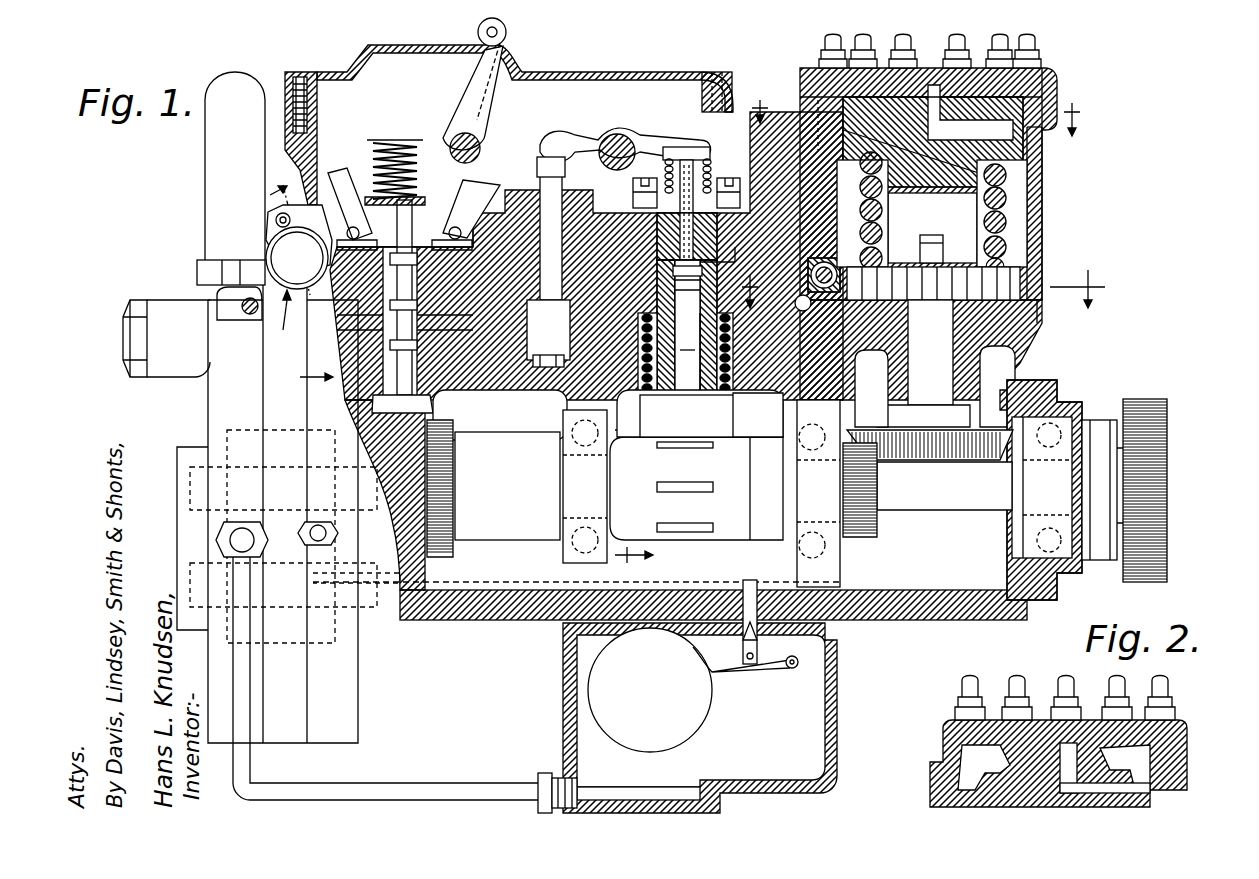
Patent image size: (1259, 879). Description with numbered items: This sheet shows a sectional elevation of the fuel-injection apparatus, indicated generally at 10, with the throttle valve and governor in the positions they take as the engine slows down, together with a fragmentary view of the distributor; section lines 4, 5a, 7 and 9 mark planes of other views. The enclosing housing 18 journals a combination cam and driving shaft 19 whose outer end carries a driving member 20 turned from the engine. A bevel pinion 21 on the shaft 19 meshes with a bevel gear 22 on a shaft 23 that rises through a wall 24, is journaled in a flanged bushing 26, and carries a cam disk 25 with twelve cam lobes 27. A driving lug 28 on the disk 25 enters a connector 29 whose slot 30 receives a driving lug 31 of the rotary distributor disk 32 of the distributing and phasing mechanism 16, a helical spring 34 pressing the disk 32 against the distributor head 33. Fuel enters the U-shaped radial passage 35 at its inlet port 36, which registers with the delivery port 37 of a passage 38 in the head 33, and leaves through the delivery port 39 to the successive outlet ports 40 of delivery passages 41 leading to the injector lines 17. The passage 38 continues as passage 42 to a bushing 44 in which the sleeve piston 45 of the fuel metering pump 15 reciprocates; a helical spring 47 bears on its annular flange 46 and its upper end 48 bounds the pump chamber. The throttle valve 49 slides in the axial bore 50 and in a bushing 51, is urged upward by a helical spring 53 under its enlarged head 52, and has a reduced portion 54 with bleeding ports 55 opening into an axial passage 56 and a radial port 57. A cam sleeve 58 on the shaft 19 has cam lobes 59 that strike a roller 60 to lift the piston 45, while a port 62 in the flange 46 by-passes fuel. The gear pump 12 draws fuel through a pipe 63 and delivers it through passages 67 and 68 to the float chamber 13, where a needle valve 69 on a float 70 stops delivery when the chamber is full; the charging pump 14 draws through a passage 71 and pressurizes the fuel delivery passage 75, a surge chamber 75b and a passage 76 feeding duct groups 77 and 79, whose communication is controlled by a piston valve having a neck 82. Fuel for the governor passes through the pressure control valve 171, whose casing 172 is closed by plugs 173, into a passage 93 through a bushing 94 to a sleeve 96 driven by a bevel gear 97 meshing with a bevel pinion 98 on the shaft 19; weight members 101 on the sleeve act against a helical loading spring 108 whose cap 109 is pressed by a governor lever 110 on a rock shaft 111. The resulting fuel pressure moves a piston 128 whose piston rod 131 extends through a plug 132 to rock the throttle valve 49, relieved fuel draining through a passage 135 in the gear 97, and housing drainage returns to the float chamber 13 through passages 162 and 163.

In FIG. 1, the section line 4 is at (913, 109).
In FIG. 1, the section line 5a is at (301, 281).
In FIG. 1, the section line 7 is at (928, 289).
In FIG. 1, the section line 9 is at (608, 494).
In FIG. 1, the pump housing 10 is at (1097, 158).
In FIG. 1, the gear pump 12 is at (330, 645).
In FIG. 1, the float chamber 13 is at (562, 712).
In FIG. 1, the charging pump 14 is at (222, 437).
In FIG. 1, the fuel metering pump 15 is at (722, 170).
In FIG. 1, the distributing and phasing mechanism 16 is at (1042, 147).
In FIG. 1, the injector line 17 is at (1030, 43).
In FIG. 1, the housing 18 is at (1042, 218).
In FIG. 1, the cam and driving shaft 19 is at (970, 505).
In FIG. 1, the driving member 20 is at (1150, 400).
In FIG. 1, the bevel pinion 21 is at (860, 530).
In FIG. 1, the bevel gear 22 is at (918, 462).
In FIG. 1, the shaft 23 is at (935, 363).
In FIG. 1, the wall 24 is at (990, 355).
In FIG. 1, the cam disk 25 is at (1010, 280).
In FIG. 1, the flanged bushing 26 is at (1030, 314).
In FIG. 1, the cam lobes 27 is at (1020, 268).
In FIG. 1, the driving lug 28 is at (935, 250).
In FIG. 1, the connector 29 is at (1007, 216).
In FIG. 1, the slot 30 is at (932, 213).
In FIG. 1, the driving lug 31 is at (1008, 196).
In FIG. 1, the distributor disk 32 is at (1030, 165).
In FIG. 1, the distributor head 33 is at (1057, 75).
In FIG. 1, the helical spring 34 is at (1000, 251).
In FIG. 1, the U-shaped radial passage 35 is at (933, 158).
In FIG. 1, the inlet port 36 is at (798, 248).
In FIG. 1, the delivery port 37 is at (970, 112).
In FIG. 1, the passage 38 is at (915, 88).
In FIG. 1, the delivery port 39 is at (1040, 82).
In FIG. 2, the outlet ports 40 is at (1135, 760).
In FIG. 2, the delivery passage 41 is at (1165, 746).
In FIG. 1, the passage 42 is at (822, 146).
In FIG. 1, the bushing 44 is at (660, 282).
In FIG. 1, the sleeve piston 45 is at (700, 356).
In FIG. 1, the annular flange 46 is at (742, 397).
In FIG. 1, the helical spring 47 is at (733, 376).
In FIG. 1, the upper end of piston 48 is at (718, 240).
In FIG. 1, the throttle valve 49 is at (680, 246).
In FIG. 1, the axial bore 50 is at (687, 331).
In FIG. 1, the bushing 51 is at (740, 195).
In FIG. 1, the enlarged head 52 is at (678, 150).
In FIG. 1, the helical spring 53 is at (714, 164).
In FIG. 1, the reduced portion 54 is at (673, 271).
In FIG. 1, the bleeding ports 55 is at (658, 300).
In FIG. 1, the axial passage 56 is at (640, 315).
In FIG. 1, the radial port 57 is at (640, 198).
In FIG. 1, the cam sleeve 58 is at (740, 530).
In FIG. 1, the cam lobes 59 is at (700, 492).
In FIG. 1, the roller 60 is at (705, 428).
In FIG. 1, the port 62 is at (680, 415).
In FIG. 1, the pipe 63 is at (330, 530).
In FIG. 1, the passage 67 is at (499, 600).
In FIG. 1, the passage 68 is at (740, 628).
In FIG. 1, the needle valve 69 is at (780, 668).
In FIG. 1, the float 70 is at (650, 690).
In FIG. 1, the passage 71 is at (400, 792).
In FIG. 1, the fuel delivery passage 75 is at (250, 322).
In FIG. 1, the surge chamber 75b is at (218, 190).
In FIG. 1, the passage 76 is at (805, 312).
In FIG. 1, the duct group 77 is at (812, 300).
In FIG. 1, the duct group 79 is at (866, 210).
In FIG. 1, the neck 82 is at (862, 248).
In FIG. 1, the passage 93 is at (705, 262).
In FIG. 1, the bushing 94 is at (445, 312).
In FIG. 1, the sleeve 96 is at (450, 345).
In FIG. 1, the bevel gear 97 is at (438, 416).
In FIG. 1, the bevel pinion 98 is at (490, 540).
In FIG. 1, the weight members 101 is at (480, 178).
In FIG. 1, the loading spring 108 is at (378, 157).
In FIG. 1, the cap 109 is at (378, 143).
In FIG. 1, the governor lever 110 is at (492, 107).
In FIG. 1, the rock shaft 111 is at (474, 146).
In FIG. 1, the piston 128 is at (548, 353).
In FIG. 1, the piston rod 131 is at (553, 195).
In FIG. 1, the plug 132 is at (548, 330).
In FIG. 1, the passage 135 is at (438, 455).
In FIG. 1, the passage 162 is at (680, 582).
In FIG. 1, the passage 163 is at (852, 588).
In FIG. 1, the pressure control valve 171 is at (290, 269).
In FIG. 1, the casing 172 is at (288, 234).
In FIG. 1, the plugs 173 is at (283, 258).